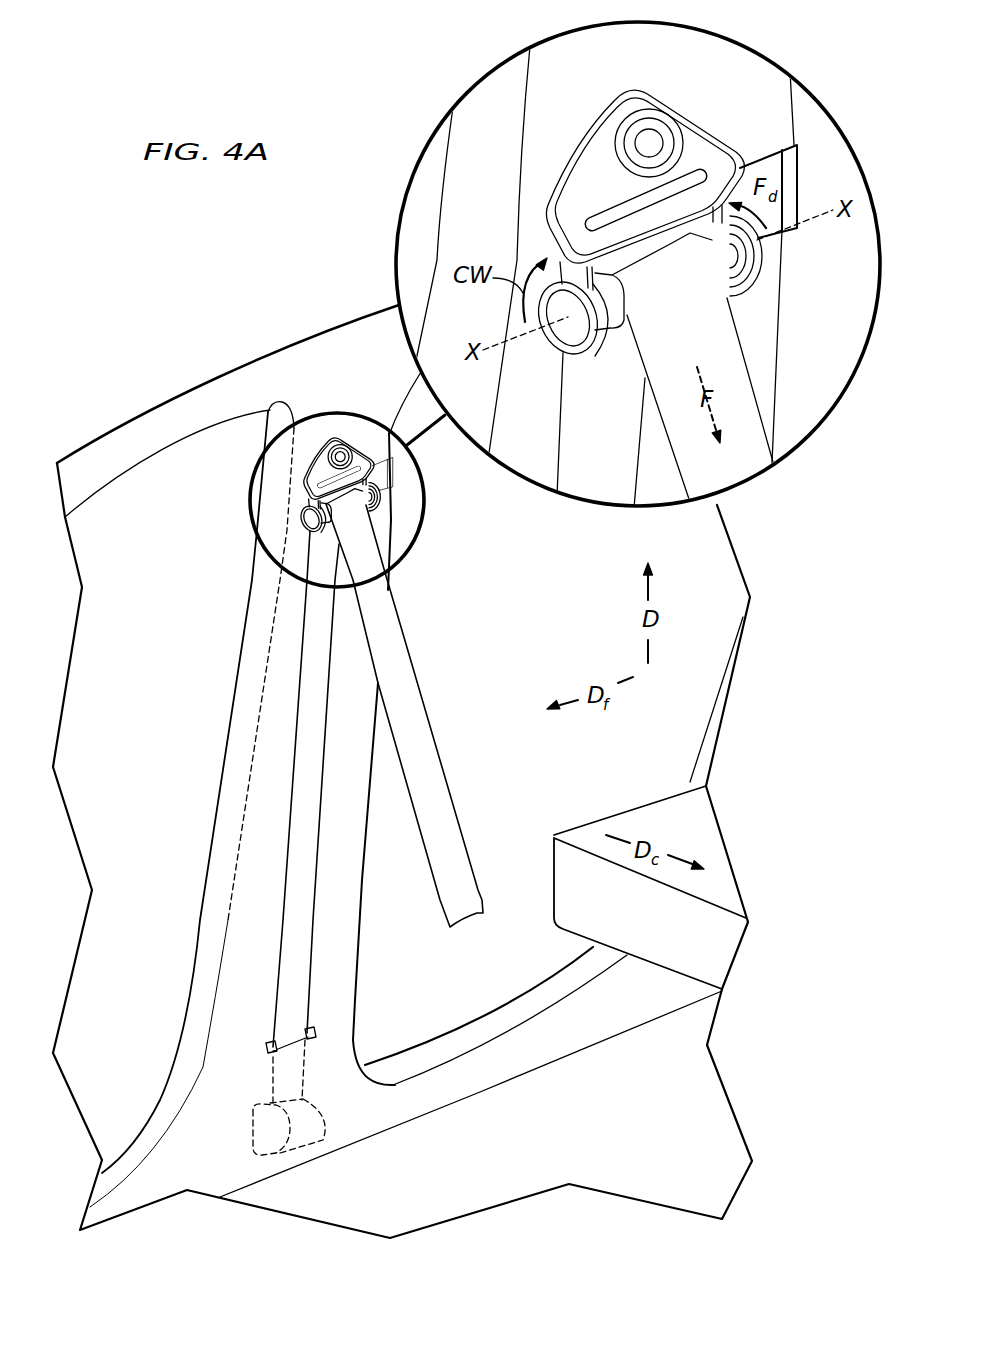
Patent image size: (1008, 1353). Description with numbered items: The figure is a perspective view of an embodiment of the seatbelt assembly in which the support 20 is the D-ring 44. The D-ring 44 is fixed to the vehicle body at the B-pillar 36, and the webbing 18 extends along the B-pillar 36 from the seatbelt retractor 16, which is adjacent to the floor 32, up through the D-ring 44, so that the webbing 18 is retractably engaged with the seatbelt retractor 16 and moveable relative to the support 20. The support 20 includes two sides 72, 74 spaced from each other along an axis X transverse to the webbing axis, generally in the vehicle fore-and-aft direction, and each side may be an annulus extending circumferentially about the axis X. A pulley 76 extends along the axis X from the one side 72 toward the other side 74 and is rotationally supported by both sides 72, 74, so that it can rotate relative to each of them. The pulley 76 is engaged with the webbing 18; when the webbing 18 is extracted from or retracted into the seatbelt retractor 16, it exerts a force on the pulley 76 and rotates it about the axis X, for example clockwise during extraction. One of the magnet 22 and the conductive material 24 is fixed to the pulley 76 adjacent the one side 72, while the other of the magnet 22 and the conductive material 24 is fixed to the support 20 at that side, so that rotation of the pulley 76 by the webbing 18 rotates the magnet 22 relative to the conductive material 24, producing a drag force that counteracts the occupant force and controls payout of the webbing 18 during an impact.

The seatbelt retractor 16 is at (303, 1143).
The webbing 18 is at (559, 423).
The support 20 is at (613, 80).
The magnet 22 is at (745, 290).
The conductive material 24 is at (765, 268).
The floor 32 is at (527, 1077).
The B-pillar 36 is at (487, 170).
The D-ring 44 is at (578, 133).
The one side of the support 72 is at (555, 350).
The other side of the support 74 is at (730, 297).
The pulley 76 is at (617, 342).